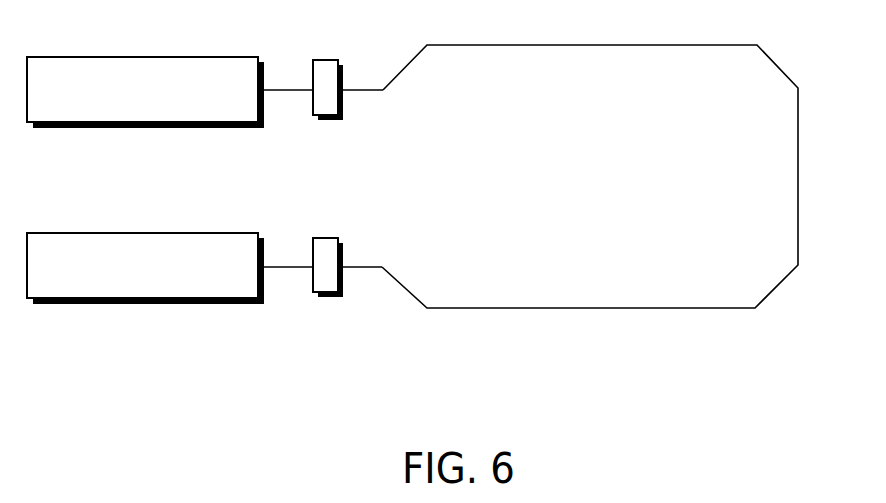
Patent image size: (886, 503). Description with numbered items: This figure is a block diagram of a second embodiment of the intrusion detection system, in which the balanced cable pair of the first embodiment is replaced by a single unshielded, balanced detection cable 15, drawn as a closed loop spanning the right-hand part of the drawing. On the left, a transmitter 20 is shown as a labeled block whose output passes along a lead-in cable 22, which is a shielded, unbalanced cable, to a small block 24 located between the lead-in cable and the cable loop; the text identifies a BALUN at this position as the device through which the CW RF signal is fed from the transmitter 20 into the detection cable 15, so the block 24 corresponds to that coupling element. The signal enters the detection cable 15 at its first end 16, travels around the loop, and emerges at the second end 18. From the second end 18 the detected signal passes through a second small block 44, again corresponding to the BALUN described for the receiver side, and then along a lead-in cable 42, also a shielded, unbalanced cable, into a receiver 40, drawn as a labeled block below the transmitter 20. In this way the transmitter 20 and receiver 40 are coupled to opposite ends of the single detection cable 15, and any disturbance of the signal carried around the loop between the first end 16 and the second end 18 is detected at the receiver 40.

The detection cable 15 is at (799, 201).
The first end 16 is at (368, 78).
The second end 18 is at (373, 252).
The transmitter 20 is at (158, 57).
The lead-in cable 22 is at (285, 78).
The transmitter coupler 24 is at (322, 56).
The receiver 40 is at (157, 233).
The lead-in cable 42 is at (294, 282).
The receiver coupler 44 is at (334, 308).